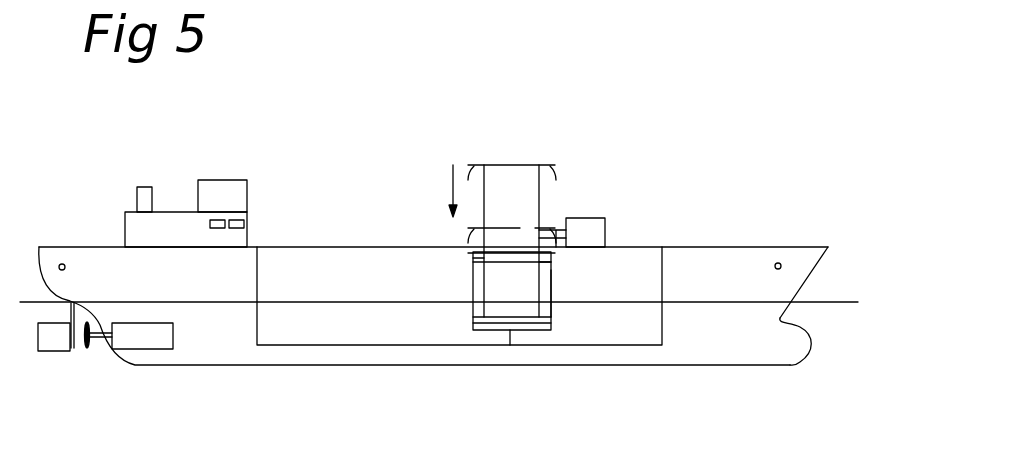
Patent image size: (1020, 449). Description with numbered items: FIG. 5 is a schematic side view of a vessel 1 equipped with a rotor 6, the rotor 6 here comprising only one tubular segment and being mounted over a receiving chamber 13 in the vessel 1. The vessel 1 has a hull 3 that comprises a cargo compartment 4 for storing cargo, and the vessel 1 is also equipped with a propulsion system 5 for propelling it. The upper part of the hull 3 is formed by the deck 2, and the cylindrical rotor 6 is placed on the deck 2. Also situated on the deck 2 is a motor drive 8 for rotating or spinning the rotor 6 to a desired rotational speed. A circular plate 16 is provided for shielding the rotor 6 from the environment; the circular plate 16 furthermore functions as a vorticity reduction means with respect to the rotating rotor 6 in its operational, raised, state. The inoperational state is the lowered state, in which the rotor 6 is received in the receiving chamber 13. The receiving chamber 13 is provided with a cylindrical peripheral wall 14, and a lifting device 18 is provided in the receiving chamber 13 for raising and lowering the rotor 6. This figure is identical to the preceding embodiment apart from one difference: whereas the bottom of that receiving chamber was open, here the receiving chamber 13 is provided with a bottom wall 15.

The vessel 1 is at (687, 163).
The deck 2 is at (698, 247).
The hull 3 is at (788, 348).
The cargo compartment 4 is at (328, 327).
The propulsion system 5 is at (153, 338).
The rotor 6 is at (562, 200).
The motor drive 8 is at (595, 233).
The receiving chamber 13 is at (472, 290).
The cylindrical peripheral wall 14 is at (552, 290).
The bottom wall 15 is at (510, 345).
The circular plate 16 is at (513, 165).
The lifting device 18 is at (472, 253).